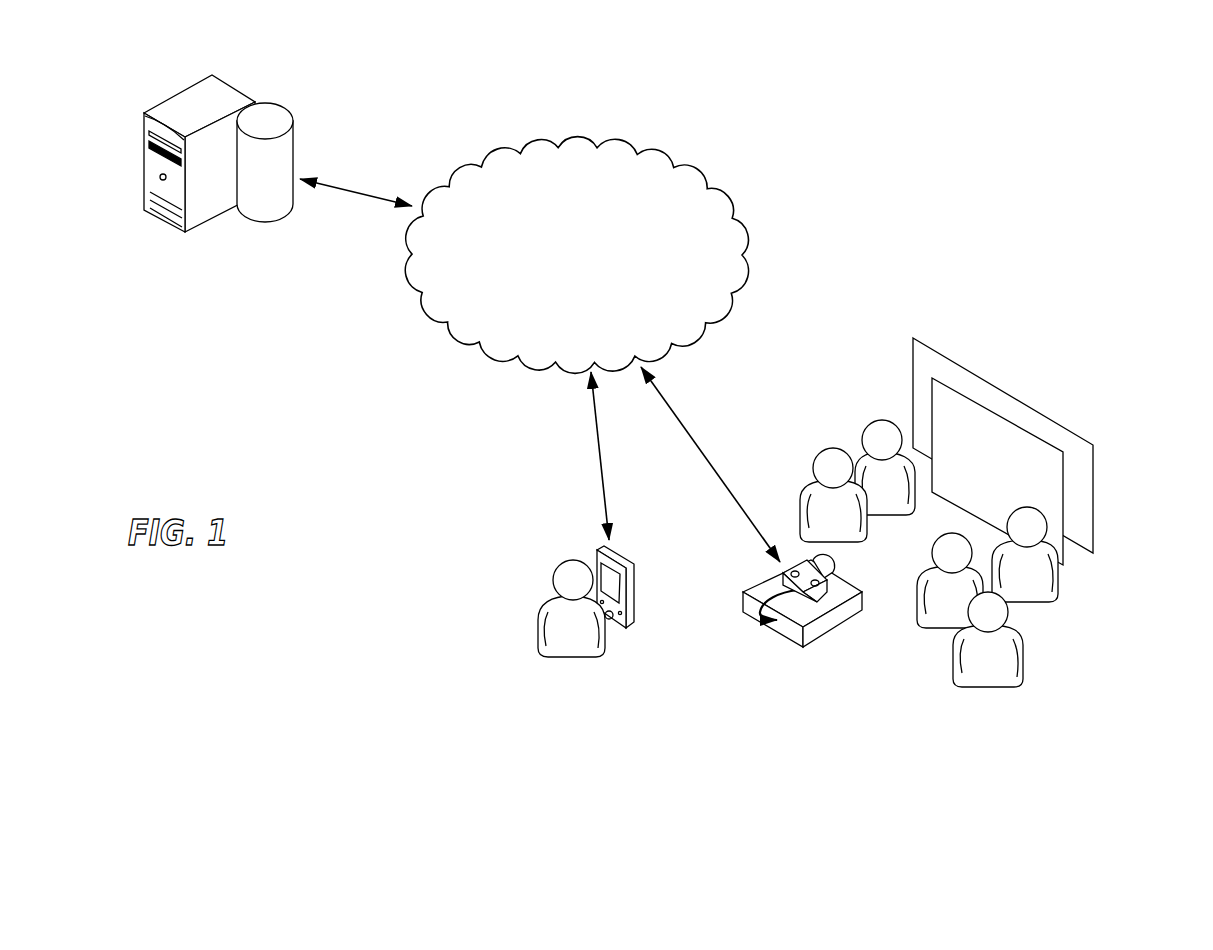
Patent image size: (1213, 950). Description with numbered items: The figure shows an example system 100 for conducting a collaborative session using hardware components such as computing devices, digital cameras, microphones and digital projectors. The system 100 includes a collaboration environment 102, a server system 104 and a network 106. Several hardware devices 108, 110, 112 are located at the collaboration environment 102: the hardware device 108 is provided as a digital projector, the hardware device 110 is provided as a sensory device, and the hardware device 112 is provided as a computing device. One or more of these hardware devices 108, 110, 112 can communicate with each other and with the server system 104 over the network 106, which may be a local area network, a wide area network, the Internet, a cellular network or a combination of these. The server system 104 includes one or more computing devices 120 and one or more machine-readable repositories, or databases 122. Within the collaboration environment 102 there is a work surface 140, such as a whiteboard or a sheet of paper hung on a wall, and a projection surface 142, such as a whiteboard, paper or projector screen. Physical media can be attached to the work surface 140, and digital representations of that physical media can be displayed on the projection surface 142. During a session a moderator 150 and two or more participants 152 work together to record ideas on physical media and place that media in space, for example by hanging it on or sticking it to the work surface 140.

The system 100 is at (977, 66).
The collaboration environment 102 is at (832, 318).
The server system 104 is at (244, 254).
The network 106 is at (553, 143).
The hardware device 108 is at (814, 648).
The hardware device 110 is at (783, 572).
The hardware device 112 is at (634, 566).
The computing device 120 is at (237, 83).
The database 122 is at (294, 121).
The work surface 140 is at (997, 413).
The projection surface 142 is at (1094, 445).
The moderator 150 is at (555, 654).
The participants 152 is at (1035, 603).